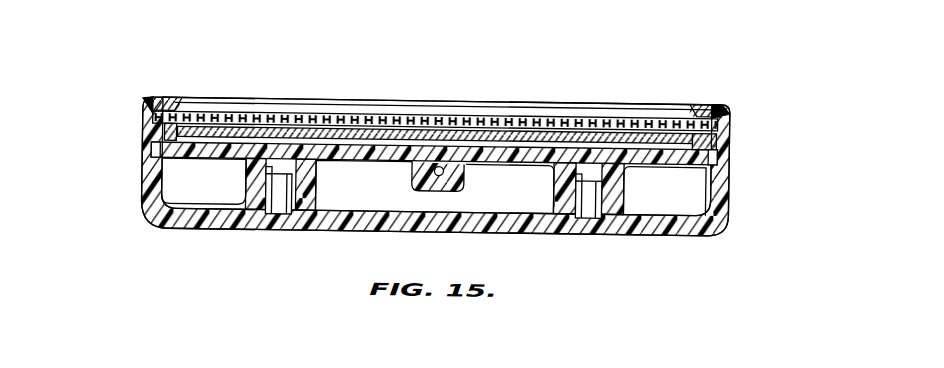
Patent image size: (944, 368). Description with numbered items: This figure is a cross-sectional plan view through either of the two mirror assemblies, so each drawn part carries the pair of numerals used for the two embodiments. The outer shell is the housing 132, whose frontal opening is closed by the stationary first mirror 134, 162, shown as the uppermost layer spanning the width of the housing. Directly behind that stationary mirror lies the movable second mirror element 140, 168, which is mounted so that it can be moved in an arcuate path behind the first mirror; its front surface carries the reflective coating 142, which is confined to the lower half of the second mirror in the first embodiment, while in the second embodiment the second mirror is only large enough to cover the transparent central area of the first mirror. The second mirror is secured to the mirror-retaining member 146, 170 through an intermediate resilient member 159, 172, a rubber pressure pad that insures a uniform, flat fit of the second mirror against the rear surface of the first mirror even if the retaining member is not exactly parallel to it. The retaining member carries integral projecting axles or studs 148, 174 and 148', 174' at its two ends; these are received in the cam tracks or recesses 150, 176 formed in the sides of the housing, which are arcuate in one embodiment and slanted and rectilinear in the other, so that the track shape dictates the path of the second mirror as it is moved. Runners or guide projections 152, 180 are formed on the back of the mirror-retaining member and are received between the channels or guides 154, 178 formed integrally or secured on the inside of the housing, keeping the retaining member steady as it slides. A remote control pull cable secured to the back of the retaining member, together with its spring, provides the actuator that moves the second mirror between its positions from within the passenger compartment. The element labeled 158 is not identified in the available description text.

The housing 132 is at (167, 238).
The stationary first mirror 134 is at (436, 89).
The first mirror 162 is at (252, 111).
The reflective coating 142 is at (356, 146).
The resilient member 159 is at (440, 103).
The intermediate rubber pressure pad 172 is at (480, 135).
The arcuate cam track 150 is at (436, 149).
The slanted rectilinear cam track 176 is at (153, 147).
The projecting axle or stud 148 is at (115, 170).
The projecting axle or stud 174 is at (115, 170).
The projecting axle or stud 148' is at (759, 171).
The projecting axle or stud 174' is at (759, 171).
The mirror-retaining member 146 is at (204, 181).
The mirror-retaining member 170 is at (204, 181).
The second mirror element 140 is at (434, 186).
The second mirror 168 is at (434, 186).
The passage opening 158 is at (447, 164).
The runner or projection 152 is at (484, 187).
The guide projection 180 is at (293, 171).
The channel or guide 154 is at (433, 222).
The guide channel 178 is at (318, 188).